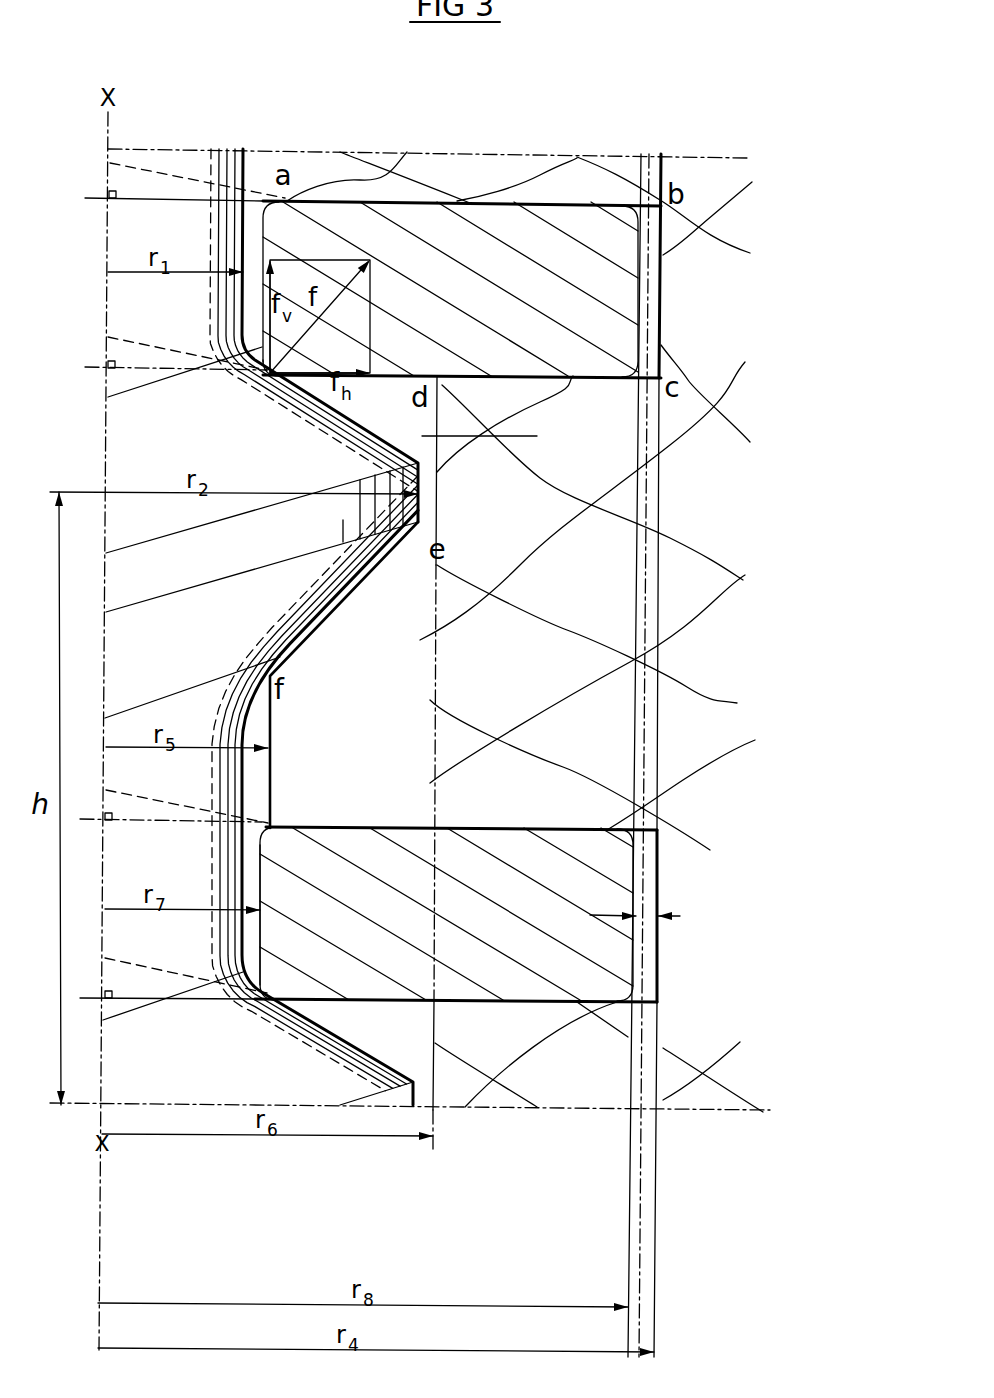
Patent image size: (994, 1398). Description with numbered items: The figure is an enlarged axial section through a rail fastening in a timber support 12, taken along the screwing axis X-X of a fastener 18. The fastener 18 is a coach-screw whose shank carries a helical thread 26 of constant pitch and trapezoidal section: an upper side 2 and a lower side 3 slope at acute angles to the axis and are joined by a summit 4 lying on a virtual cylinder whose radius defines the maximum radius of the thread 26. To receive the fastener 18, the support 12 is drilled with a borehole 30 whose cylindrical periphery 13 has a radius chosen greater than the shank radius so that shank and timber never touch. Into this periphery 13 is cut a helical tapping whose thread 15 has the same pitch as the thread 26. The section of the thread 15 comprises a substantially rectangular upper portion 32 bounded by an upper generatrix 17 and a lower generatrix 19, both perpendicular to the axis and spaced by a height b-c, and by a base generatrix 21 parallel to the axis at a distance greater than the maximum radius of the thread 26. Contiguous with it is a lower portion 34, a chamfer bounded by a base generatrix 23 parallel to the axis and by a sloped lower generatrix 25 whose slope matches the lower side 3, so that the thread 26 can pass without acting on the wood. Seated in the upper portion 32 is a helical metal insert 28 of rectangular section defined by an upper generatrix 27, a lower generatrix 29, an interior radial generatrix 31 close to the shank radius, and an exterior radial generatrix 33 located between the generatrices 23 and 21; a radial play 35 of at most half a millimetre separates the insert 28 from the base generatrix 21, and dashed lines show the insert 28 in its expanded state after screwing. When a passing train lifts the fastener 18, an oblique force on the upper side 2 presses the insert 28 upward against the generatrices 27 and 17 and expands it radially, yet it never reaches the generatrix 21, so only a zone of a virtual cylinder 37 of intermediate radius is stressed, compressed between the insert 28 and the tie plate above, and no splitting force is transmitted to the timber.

The upper side 2 is at (348, 410).
The lower side 3 is at (348, 585).
The summit 4 is at (437, 473).
The support 12 is at (693, 600).
The cylindrical periphery 13 is at (271, 168).
The thread of the helical tapping 15 is at (493, 433).
The upper generatrix 17 is at (178, 199).
The fastener 18 is at (143, 202).
The lower generatrix 19 is at (197, 372).
The base generatrix 21 is at (656, 338).
The base generatrix 23 is at (432, 515).
The lower generatrix 25 is at (380, 574).
The helical thread 26 is at (142, 580).
The upper generatrix 27 is at (172, 826).
The helical metal insert 28 is at (430, 233).
The lower generatrix 29 is at (192, 999).
The borehole 30 is at (248, 158).
The interior radial generatrix 31 is at (258, 876).
The upper portion 32 is at (657, 298).
The exterior radial generatrix 33 is at (636, 876).
The lower portion 34 is at (432, 492).
The radial play 35 is at (632, 903).
The virtual cylinder 37 is at (645, 713).